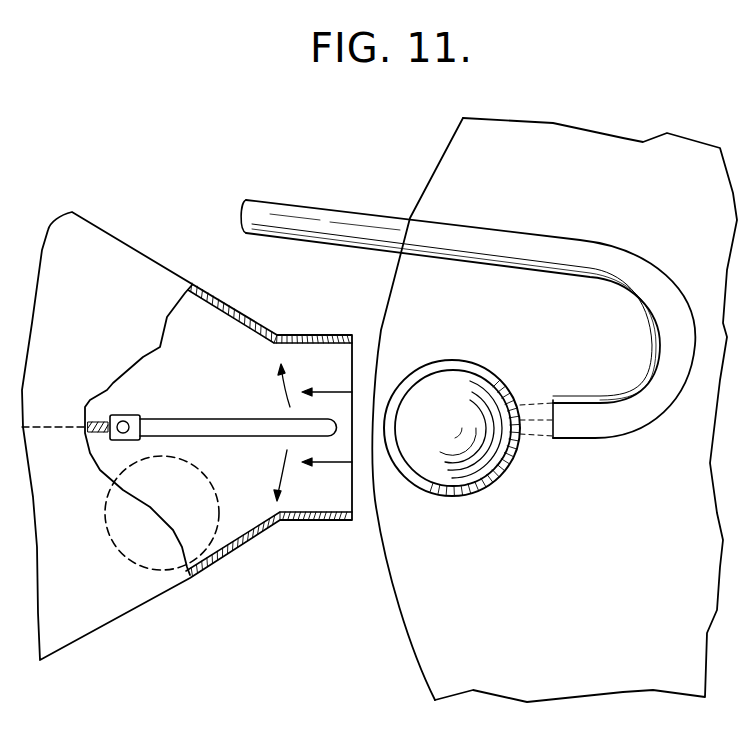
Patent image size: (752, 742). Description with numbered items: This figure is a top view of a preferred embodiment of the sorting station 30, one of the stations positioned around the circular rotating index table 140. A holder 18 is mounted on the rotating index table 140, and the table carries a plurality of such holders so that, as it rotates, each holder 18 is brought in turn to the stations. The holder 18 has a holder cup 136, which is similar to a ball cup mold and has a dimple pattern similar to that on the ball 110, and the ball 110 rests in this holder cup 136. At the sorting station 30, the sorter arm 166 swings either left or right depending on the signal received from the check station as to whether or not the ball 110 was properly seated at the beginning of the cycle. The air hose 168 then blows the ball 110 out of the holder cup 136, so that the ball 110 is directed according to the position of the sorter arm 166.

The sorting station 30 is at (123, 222).
The sorter arm 166 is at (268, 423).
The ball 110 is at (210, 524).
The holder cup 136 is at (513, 463).
The air hose 168 is at (310, 208).
The holder 18 is at (606, 238).
The rotating index table 140 is at (438, 170).